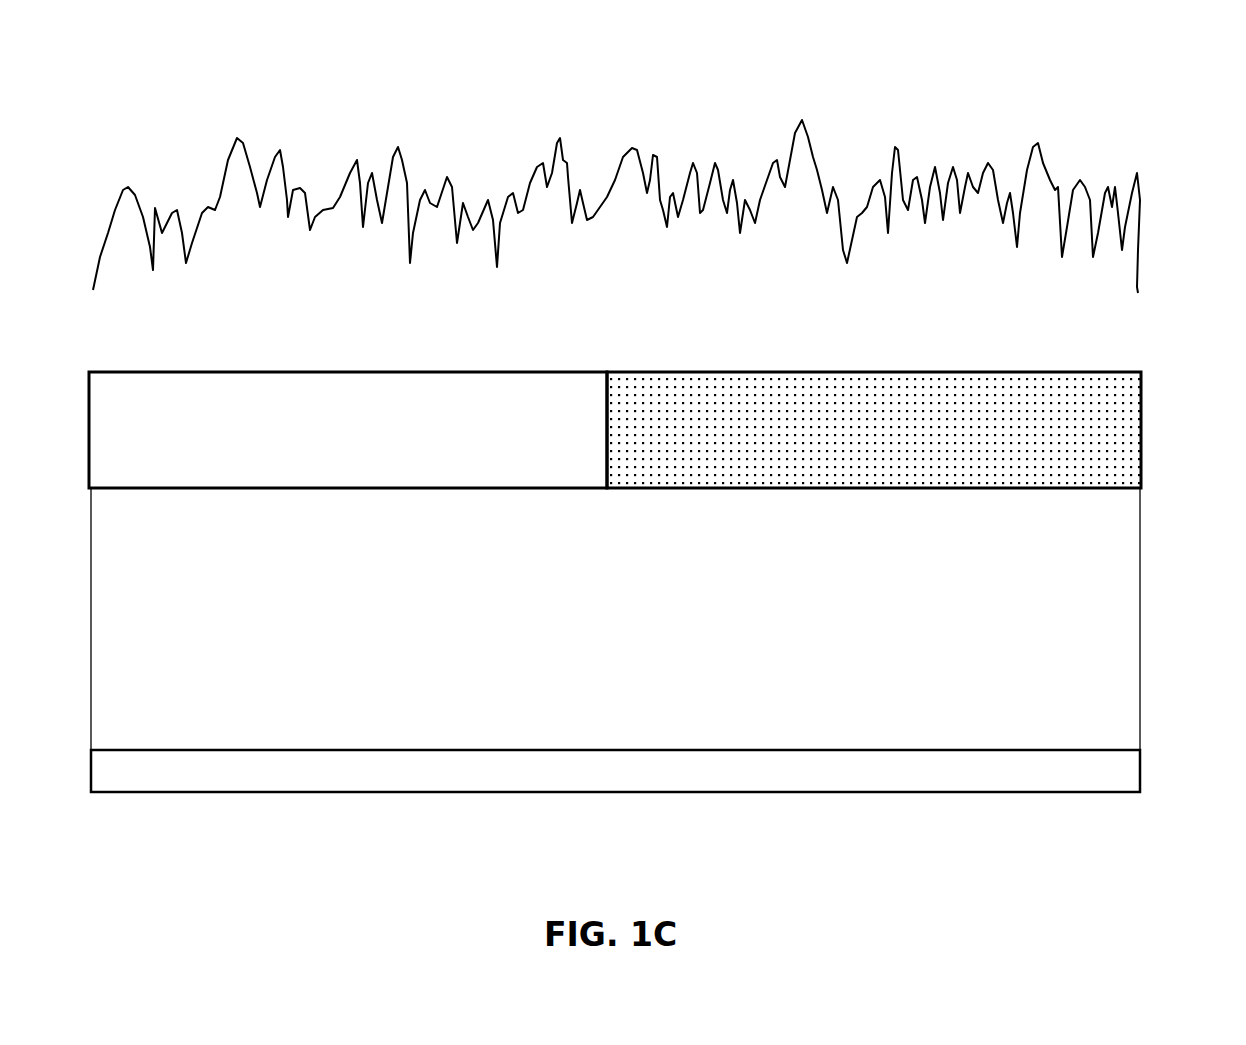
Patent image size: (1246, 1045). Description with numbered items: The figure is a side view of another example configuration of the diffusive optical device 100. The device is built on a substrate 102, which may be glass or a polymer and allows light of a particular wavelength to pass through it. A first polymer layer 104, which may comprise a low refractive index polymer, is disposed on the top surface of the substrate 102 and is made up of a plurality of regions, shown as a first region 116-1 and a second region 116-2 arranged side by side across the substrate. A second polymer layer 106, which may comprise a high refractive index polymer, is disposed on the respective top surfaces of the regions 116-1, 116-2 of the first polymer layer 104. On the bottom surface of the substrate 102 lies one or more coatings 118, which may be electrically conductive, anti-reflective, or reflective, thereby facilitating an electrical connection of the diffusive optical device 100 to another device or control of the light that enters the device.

The diffusive optical device 100 is at (112, 50).
The substrate 102 is at (638, 633).
The first polymer layer 104 is at (660, 430).
The second polymer layer 106 is at (640, 322).
The region 116-1 is at (380, 439).
The region 116-2 is at (905, 439).
The coating 118 is at (634, 781).